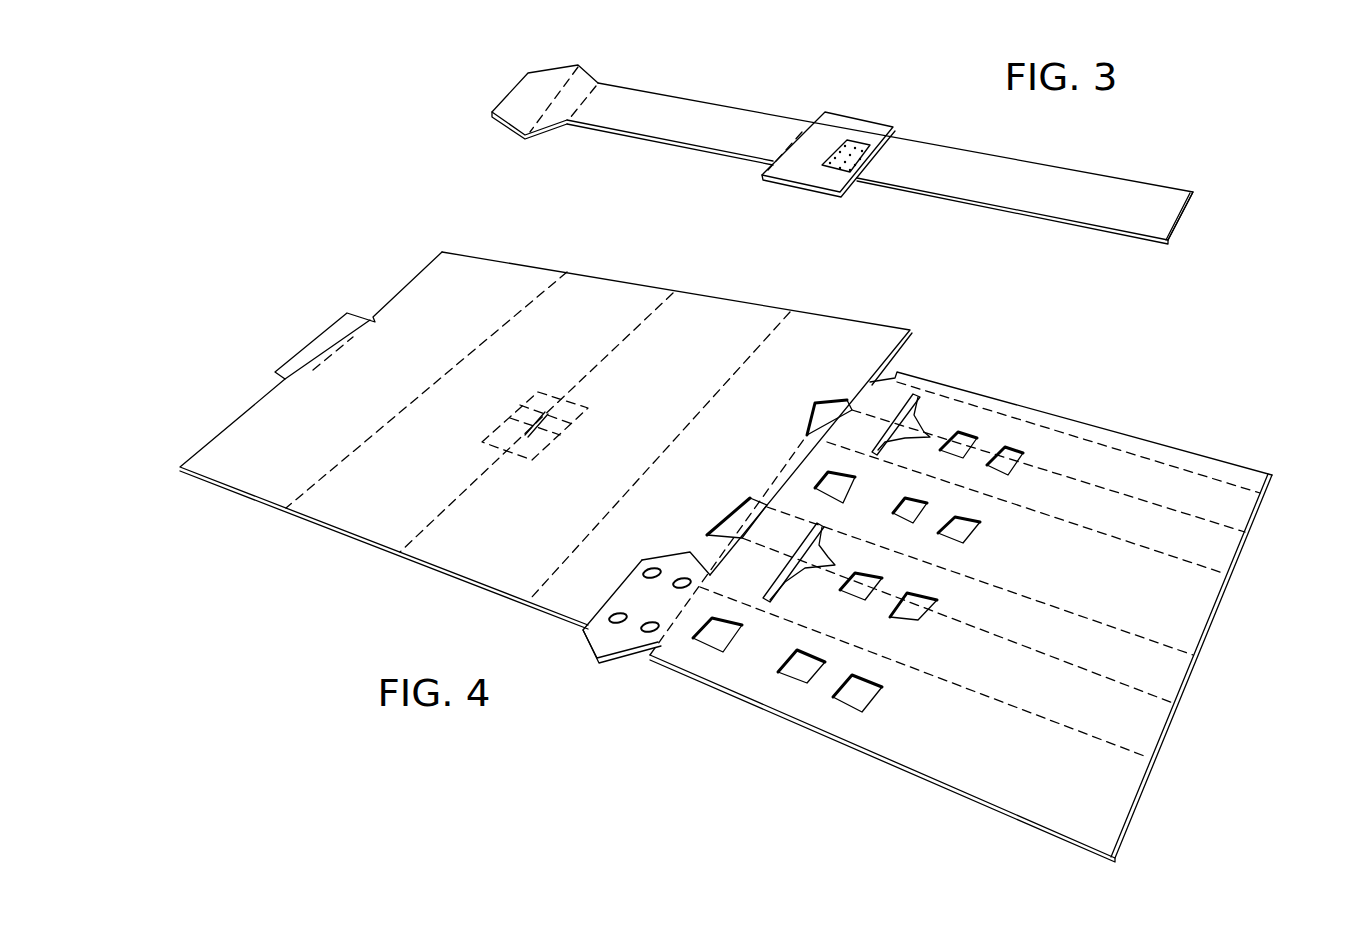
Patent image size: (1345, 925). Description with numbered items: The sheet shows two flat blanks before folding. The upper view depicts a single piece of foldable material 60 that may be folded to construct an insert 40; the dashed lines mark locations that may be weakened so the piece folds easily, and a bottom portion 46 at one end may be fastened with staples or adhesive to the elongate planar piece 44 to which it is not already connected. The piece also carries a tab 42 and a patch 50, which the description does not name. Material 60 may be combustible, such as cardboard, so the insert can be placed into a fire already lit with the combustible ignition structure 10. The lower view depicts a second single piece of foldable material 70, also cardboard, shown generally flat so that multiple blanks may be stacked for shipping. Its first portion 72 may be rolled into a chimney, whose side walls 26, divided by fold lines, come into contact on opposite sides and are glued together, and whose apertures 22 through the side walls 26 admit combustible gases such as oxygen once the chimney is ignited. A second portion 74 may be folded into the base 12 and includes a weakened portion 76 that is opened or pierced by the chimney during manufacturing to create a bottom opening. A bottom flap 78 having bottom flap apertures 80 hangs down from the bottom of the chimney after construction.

In FIG. 4, the combustible ignition structure 10 is at (1134, 395).
In FIG. 4, the base 12 is at (805, 340).
In FIG. 4, the apertures 22 is at (1007, 457).
In FIG. 4, the side wall 26 is at (1237, 508).
In FIG. 3, the insert 40 is at (1137, 148).
In FIG. 3, the tab 42 is at (802, 163).
In FIG. 3, the elongate planar piece 44 is at (658, 125).
In FIG. 3, the bottom portion 46 is at (582, 84).
In FIG. 3, the adhesive patch 50 is at (848, 142).
In FIG. 3, the single piece of foldable material 60 is at (729, 86).
In FIG. 4, the second single piece of foldable material 70 is at (725, 747).
In FIG. 4, the first portion 72 is at (931, 808).
In FIG. 4, the second portion 74 is at (386, 570).
In FIG. 4, the weakened portion 76 is at (517, 482).
In FIG. 4, the bottom flap 78 is at (619, 640).
In FIG. 4, the bottom flap apertures 80 is at (618, 620).